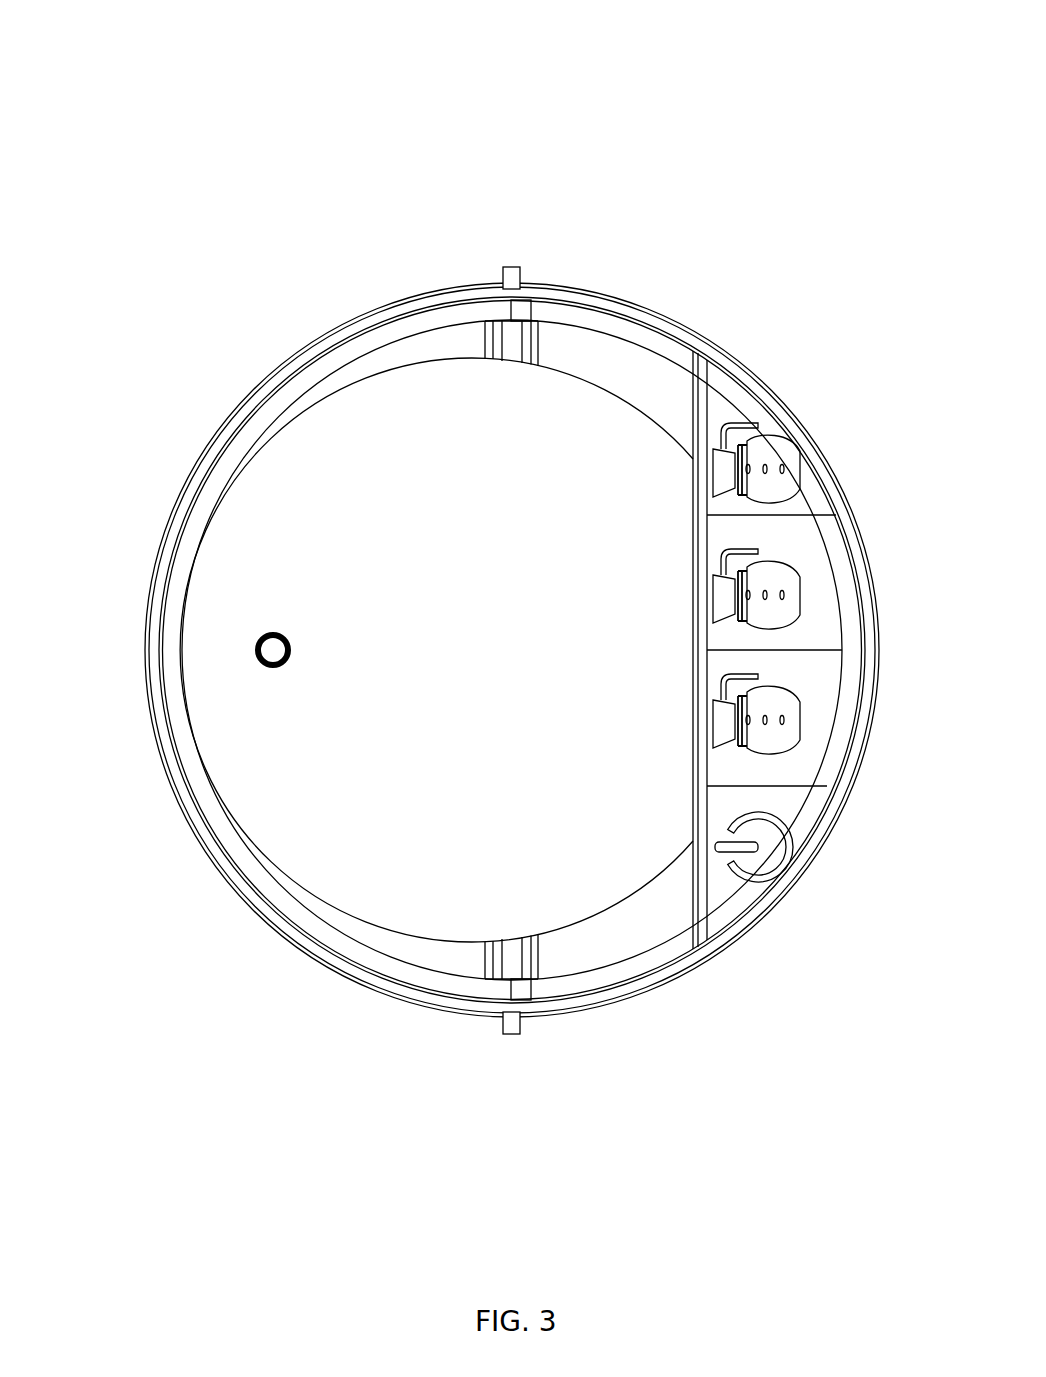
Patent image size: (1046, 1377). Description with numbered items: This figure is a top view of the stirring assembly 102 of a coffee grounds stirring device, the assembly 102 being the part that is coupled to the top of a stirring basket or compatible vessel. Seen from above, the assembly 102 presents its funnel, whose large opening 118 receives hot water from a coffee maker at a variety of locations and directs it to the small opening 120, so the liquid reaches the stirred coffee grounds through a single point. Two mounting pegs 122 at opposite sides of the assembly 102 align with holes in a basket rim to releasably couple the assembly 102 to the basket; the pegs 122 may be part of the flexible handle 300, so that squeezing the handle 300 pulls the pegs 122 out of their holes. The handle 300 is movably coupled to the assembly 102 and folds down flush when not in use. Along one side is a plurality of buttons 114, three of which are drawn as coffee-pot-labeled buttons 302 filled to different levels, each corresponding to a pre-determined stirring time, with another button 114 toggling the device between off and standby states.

The stirring assembly 102 is at (760, 121).
The buttons 114 is at (824, 380).
The large opening 118 is at (633, 782).
The small opening 120 is at (268, 632).
The mounting pegs 122 is at (512, 266).
The handle 300 is at (363, 352).
The socket 302 is at (803, 468).